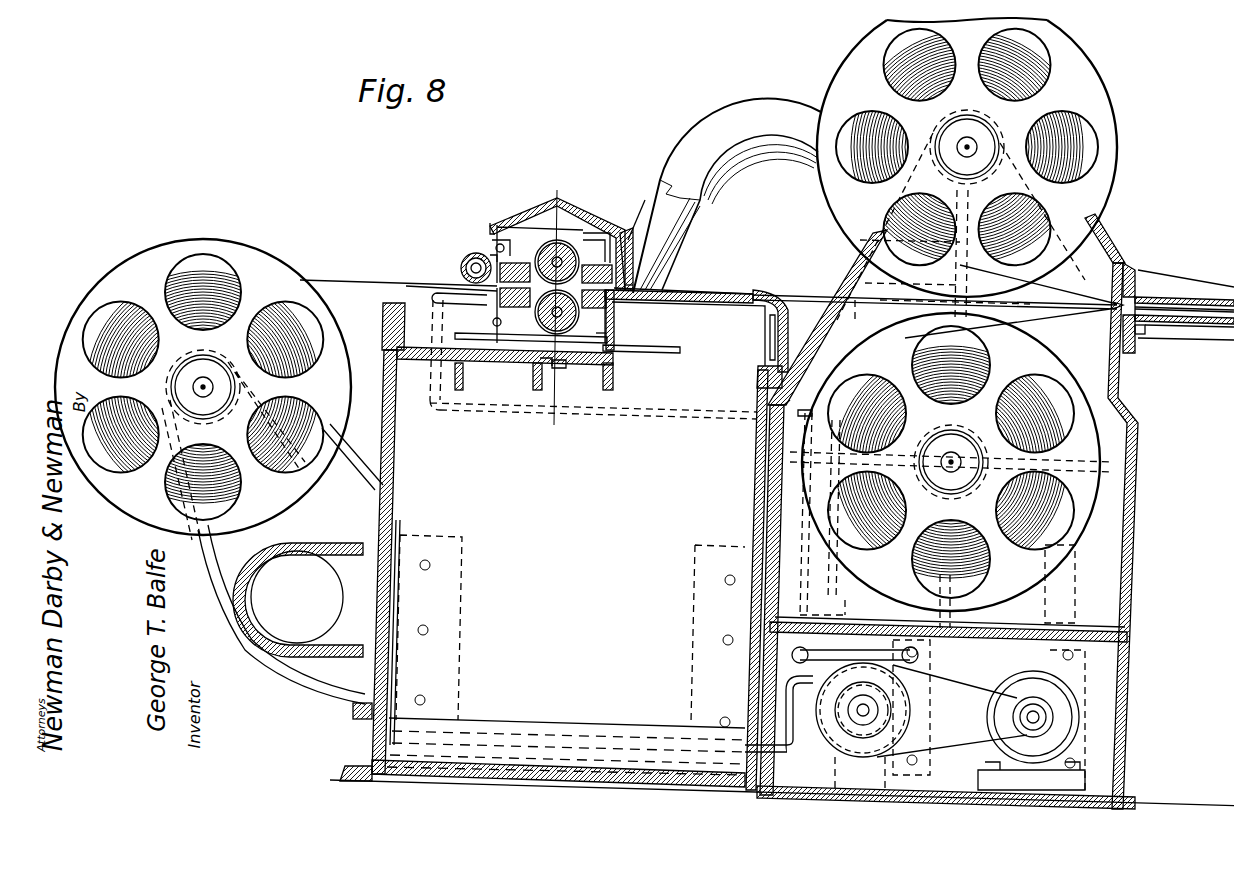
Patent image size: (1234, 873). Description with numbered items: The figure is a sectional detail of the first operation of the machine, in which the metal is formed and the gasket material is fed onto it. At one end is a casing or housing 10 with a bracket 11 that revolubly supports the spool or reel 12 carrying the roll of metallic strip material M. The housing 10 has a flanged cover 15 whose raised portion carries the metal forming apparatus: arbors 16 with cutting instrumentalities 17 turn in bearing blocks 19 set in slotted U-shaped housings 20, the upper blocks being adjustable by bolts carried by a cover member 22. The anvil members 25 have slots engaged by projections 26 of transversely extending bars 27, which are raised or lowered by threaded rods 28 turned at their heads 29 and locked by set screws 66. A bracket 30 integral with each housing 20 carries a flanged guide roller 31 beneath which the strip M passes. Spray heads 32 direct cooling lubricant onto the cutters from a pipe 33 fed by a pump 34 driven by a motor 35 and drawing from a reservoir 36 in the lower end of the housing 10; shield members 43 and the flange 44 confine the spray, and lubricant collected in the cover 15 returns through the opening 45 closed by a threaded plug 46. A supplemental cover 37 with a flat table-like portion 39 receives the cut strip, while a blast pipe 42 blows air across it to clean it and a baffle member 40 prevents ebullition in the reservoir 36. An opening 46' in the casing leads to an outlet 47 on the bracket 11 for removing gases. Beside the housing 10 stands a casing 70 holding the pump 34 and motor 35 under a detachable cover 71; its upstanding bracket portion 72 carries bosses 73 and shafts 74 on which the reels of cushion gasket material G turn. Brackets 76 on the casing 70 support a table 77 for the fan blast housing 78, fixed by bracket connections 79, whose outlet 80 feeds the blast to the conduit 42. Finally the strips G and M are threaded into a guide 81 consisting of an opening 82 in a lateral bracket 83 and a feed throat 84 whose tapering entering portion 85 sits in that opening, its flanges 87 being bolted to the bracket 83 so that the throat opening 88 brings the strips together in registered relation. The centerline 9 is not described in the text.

The roller axis 9 is at (552, 305).
The casing or housing 10 is at (396, 518).
The bracket 11 is at (372, 486).
The spool or reel 12 is at (192, 237).
The flanged cover 15 is at (383, 320).
The arbors 16 is at (580, 235).
The cutting instrumentalities 17 is at (560, 240).
The bearing blocks 19 is at (535, 230).
The U-shaped housings 20 is at (598, 236).
The cover member 22 is at (586, 200).
The anvil members 25 is at (495, 258).
The projections 26 is at (608, 312).
The transversely extending bars 27 is at (614, 324).
The threaded rods 28 is at (500, 318).
The heads 29 is at (632, 257).
The bracket 30 is at (497, 247).
The flanged guide roller 31 is at (464, 268).
The spray heads 32 is at (510, 224).
The pipe 33 is at (640, 419).
The pump 34 is at (834, 726).
The motor 35 is at (1052, 730).
The reservoir 36 is at (577, 578).
The supplemental cover 37 is at (700, 293).
The table-like portion 39 is at (730, 294).
The baffle member 40 is at (661, 350).
The blast pipe 42 is at (720, 128).
The shield member 43 is at (642, 238).
The flange 44 is at (608, 334).
The opening 45 is at (562, 370).
The threaded plug 46 is at (540, 383).
The opening 46' is at (408, 632).
The outlet 47 is at (298, 600).
The set screws 66 is at (626, 270).
The casing or housing 70 is at (1128, 713).
The detachable cover 71 is at (990, 636).
The bracket portion 72 is at (1135, 481).
The bosses 73 is at (969, 128).
The shafts 74 is at (962, 140).
The brackets 76 is at (1050, 657).
The table 77 is at (1072, 597).
The fan blast housing 78 is at (951, 471).
The bracket connections 79 is at (1058, 590).
The outlet 80 is at (913, 293).
The guide 81 is at (1180, 286).
The opening 82 is at (1119, 313).
The bracket 83 is at (1116, 347).
The feed throat 84 is at (1140, 296).
The tapering entering portion 85 is at (1141, 343).
The flanges 87 is at (1132, 262).
The opening 88 is at (1197, 330).
The cushion gasket material G is at (1072, 147).
The metallic strip material M is at (122, 322).